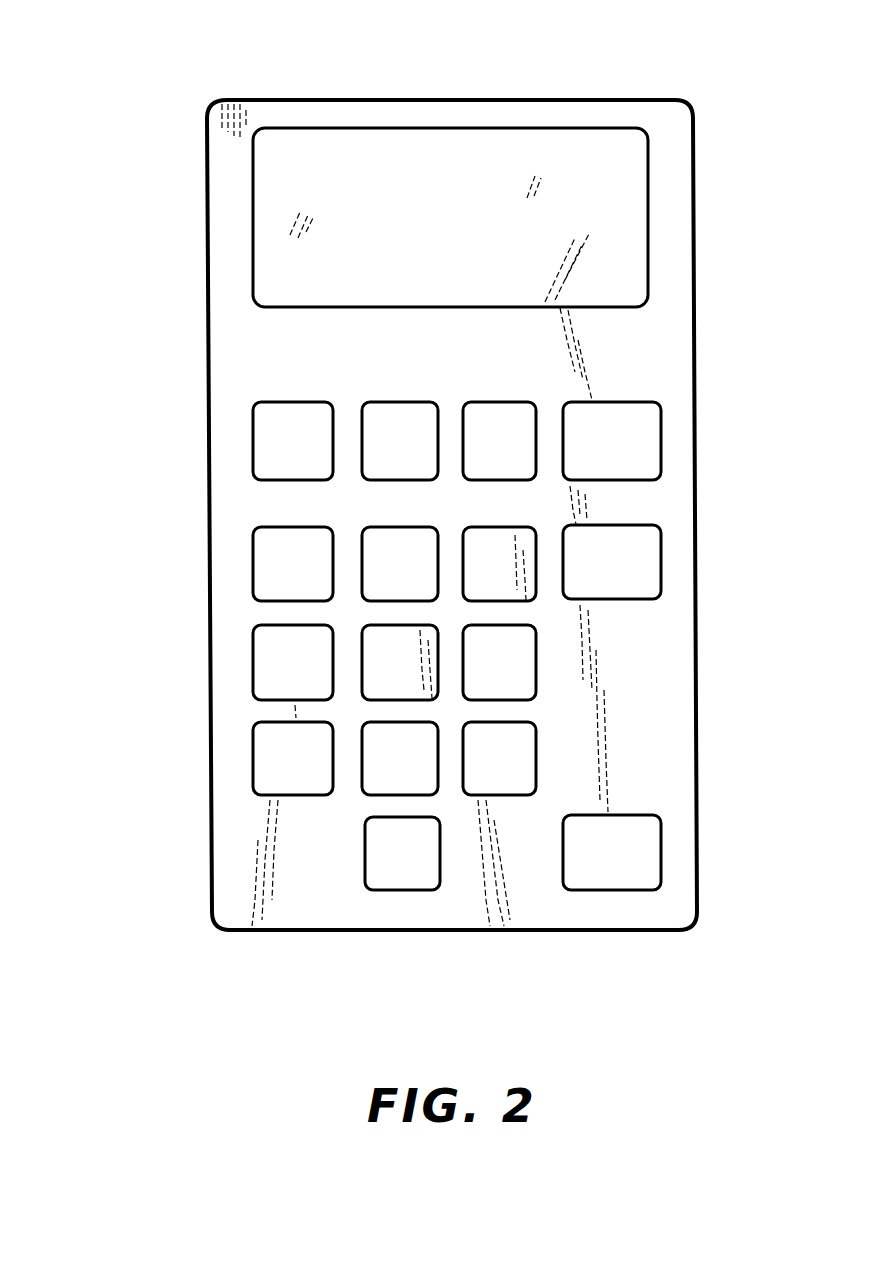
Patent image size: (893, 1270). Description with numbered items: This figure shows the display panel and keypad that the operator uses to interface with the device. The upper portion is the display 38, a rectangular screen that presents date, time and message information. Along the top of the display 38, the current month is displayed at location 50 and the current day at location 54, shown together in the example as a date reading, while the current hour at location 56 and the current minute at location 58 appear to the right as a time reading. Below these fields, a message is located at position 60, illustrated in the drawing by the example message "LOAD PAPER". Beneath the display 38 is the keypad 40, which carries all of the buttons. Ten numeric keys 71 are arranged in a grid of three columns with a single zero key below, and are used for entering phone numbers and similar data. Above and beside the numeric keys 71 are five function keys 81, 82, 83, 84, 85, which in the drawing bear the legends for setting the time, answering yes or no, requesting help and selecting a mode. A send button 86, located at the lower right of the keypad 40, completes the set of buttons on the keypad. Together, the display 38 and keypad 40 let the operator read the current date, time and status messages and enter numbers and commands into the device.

The display 38 is at (252, 265).
The keypad 40 is at (207, 380).
The month display location 50 is at (327, 137).
The day display location 54 is at (372, 137).
The hour display location 56 is at (528, 137).
The minute display location 58 is at (582, 137).
The message position 60 is at (618, 263).
The numeric keys 71 is at (213, 508).
The function key 81 is at (288, 400).
The function key 82 is at (395, 404).
The function key 83 is at (502, 405).
The function key 84 is at (617, 406).
The function key 85 is at (646, 584).
The send button 86 is at (650, 856).